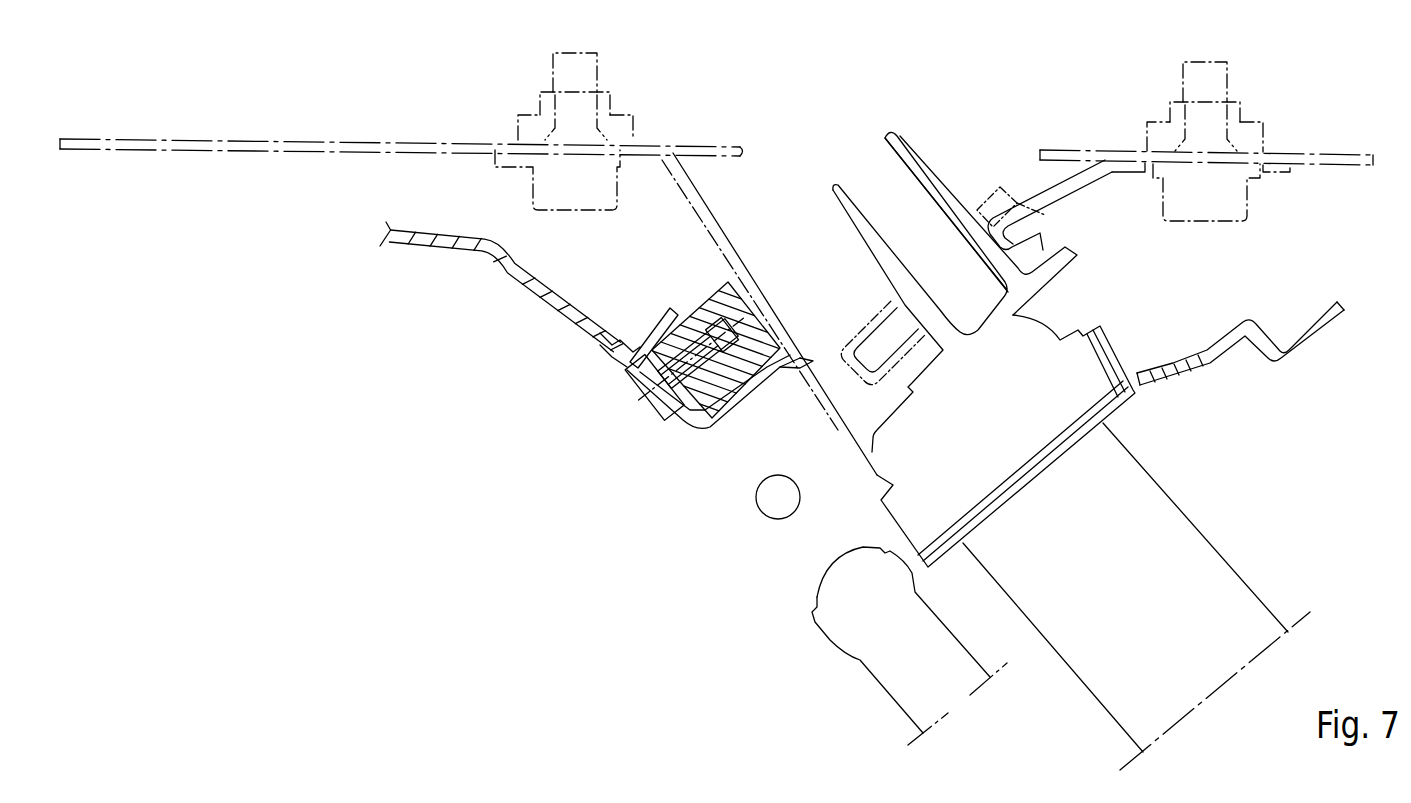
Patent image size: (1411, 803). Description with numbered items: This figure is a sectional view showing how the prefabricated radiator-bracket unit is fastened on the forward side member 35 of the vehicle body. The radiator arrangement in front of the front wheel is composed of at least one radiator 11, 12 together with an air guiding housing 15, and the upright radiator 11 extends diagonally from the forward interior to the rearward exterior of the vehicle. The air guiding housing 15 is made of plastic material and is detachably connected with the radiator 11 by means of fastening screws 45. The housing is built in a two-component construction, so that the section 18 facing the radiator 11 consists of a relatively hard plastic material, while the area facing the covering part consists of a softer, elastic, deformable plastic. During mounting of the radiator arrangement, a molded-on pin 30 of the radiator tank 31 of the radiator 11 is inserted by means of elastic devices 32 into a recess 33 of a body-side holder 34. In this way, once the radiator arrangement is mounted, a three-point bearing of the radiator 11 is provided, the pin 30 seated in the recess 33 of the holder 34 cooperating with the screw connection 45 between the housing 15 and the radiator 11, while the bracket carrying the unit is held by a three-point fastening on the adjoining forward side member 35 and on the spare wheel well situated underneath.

The radiator 11 is at (1225, 595).
The radiator 12 is at (828, 600).
The air guiding housing 15 is at (464, 262).
The section 18 is at (656, 380).
The molded-on pin 30 is at (932, 168).
The radiator tank 31 is at (981, 319).
The elastic devices 32 is at (862, 288).
The recess 33 is at (920, 233).
The body-side holder 34 is at (1083, 190).
The forward side member 35 is at (215, 152).
The fastening screws 45 is at (655, 400).